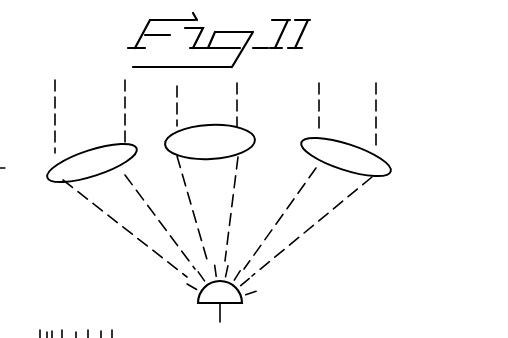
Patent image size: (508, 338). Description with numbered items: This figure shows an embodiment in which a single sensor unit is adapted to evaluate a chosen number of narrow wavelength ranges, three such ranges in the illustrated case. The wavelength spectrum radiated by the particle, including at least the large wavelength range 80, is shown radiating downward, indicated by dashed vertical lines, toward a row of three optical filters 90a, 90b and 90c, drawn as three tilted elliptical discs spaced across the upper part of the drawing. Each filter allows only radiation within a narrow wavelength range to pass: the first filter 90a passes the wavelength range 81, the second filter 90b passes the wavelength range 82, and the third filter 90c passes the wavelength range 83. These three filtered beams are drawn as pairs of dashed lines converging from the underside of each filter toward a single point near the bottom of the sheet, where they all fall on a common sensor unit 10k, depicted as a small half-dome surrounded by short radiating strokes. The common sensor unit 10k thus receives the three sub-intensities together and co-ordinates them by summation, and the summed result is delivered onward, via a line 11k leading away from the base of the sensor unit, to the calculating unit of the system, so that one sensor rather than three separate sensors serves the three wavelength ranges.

The large wavelength range 80 is at (98, 121).
The optical filter 90a is at (82, 174).
The optical filter 90b is at (239, 135).
The optical filter 90c is at (374, 163).
The wavelength range 81 is at (133, 231).
The wavelength range 82 is at (238, 186).
The wavelength range 83 is at (321, 224).
The common sensor unit 10k is at (243, 298).
The line 11k is at (222, 315).